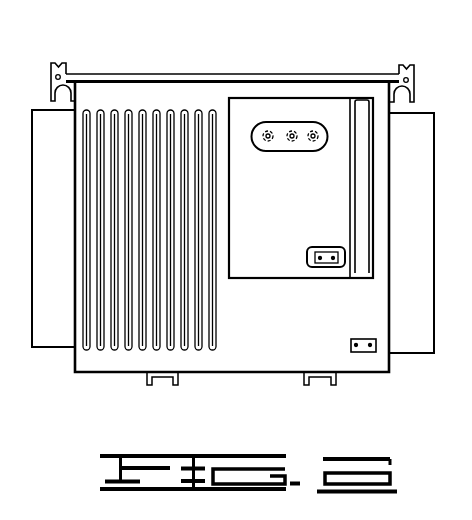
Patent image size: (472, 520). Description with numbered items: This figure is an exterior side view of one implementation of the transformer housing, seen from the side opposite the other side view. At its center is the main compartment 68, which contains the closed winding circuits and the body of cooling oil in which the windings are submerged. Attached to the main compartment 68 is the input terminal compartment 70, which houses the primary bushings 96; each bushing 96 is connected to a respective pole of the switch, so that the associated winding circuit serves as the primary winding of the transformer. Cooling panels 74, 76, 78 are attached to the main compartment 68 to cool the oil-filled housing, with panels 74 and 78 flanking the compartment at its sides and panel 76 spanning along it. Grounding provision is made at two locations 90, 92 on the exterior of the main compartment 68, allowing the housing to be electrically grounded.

The main compartment 68 is at (267, 76).
The input terminal compartment 70 is at (294, 103).
The cooling panel 74 is at (419, 355).
The cooling panel 76 is at (172, 95).
The cooling panel 78 is at (45, 352).
The grounding location 90 is at (327, 266).
The grounding location 92 is at (353, 342).
The primary bushing 96 is at (262, 126).